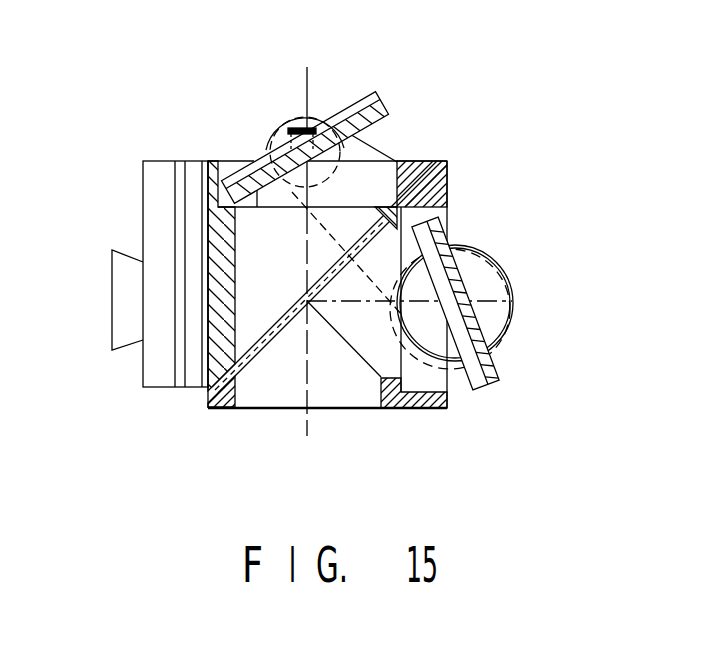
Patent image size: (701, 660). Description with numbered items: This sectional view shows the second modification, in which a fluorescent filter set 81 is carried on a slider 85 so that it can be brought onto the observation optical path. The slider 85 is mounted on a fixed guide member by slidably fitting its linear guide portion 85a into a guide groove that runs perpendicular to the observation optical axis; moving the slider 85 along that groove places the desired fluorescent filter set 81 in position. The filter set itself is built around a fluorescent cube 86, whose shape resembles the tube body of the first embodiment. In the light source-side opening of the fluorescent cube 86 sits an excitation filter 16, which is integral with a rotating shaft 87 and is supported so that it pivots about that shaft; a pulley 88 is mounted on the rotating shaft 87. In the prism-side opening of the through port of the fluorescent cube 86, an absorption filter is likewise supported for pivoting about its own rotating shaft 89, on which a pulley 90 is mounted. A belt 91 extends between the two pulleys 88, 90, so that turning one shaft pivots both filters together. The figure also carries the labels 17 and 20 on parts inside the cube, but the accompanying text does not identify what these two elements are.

The excitation filter 16 is at (487, 393).
The beam splitter 17 is at (237, 370).
The mirror 20 is at (357, 94).
The fluorescent filter set 81 is at (468, 192).
The slider 85 is at (143, 201).
The linear guide portion 85a is at (118, 318).
The fluorescent cube 86 is at (390, 410).
The rotating shaft 87 is at (513, 313).
The pulley 88 is at (503, 271).
The rotating shaft 89 is at (273, 126).
The pulley 90 is at (300, 116).
The belt 91 is at (443, 228).